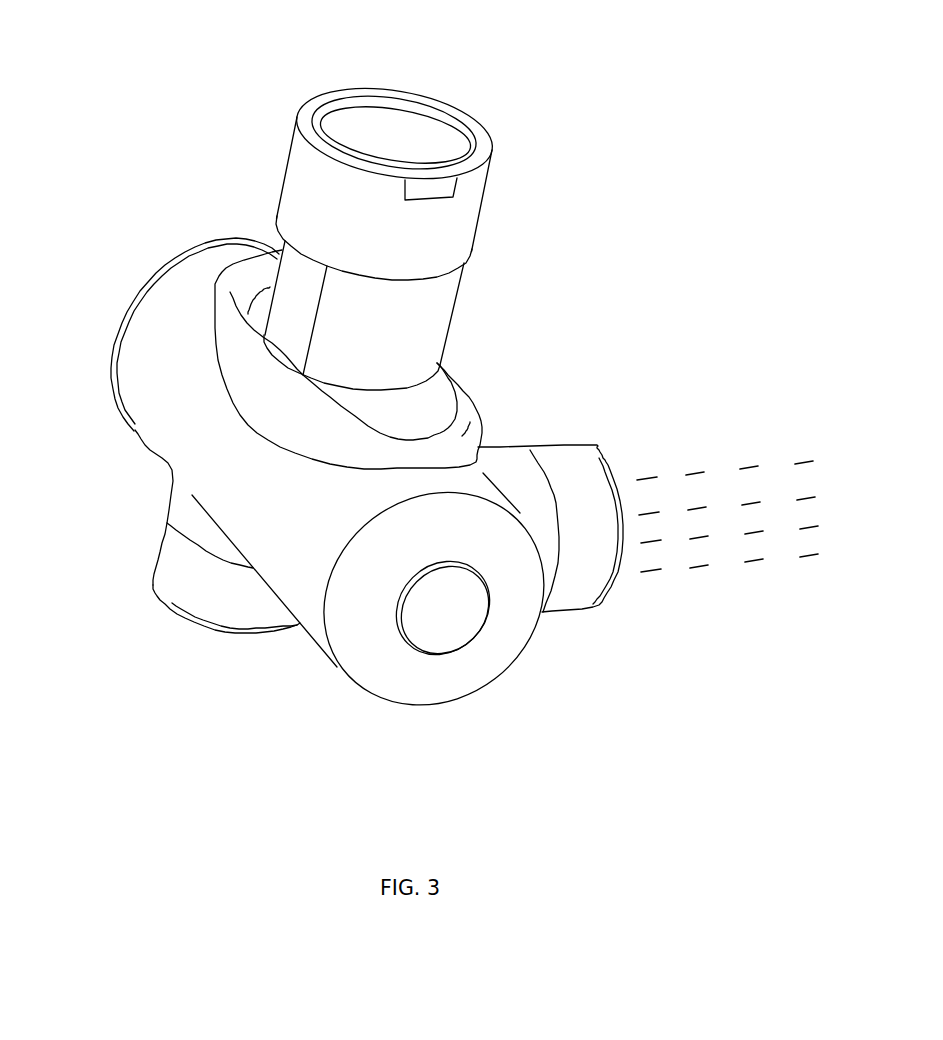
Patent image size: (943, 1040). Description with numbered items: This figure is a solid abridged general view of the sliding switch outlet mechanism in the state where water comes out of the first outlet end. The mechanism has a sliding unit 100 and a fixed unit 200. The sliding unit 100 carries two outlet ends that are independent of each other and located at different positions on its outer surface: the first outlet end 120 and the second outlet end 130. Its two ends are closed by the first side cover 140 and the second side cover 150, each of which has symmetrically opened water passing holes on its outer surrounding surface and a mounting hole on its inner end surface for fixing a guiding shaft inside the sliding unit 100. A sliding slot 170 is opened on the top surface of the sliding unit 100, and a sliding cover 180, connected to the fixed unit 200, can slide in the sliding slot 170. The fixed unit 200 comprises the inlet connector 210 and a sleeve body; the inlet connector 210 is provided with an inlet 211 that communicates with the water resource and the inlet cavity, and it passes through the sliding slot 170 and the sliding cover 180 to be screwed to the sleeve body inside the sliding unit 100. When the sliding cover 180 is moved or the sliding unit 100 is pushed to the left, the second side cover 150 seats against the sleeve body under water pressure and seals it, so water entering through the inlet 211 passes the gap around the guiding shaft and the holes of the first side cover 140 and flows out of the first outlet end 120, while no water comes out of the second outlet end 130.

The sliding unit 100 is at (138, 431).
The first outlet end 120 is at (593, 607).
The second outlet end 130 is at (162, 567).
The first side cover 140 is at (437, 673).
The second side cover 150 is at (130, 313).
The sliding slot 170 is at (448, 435).
The sliding cover 180 is at (437, 392).
The fixed unit 200 is at (449, 299).
The inlet connector 210 is at (296, 177).
The inlet 211 is at (387, 117).